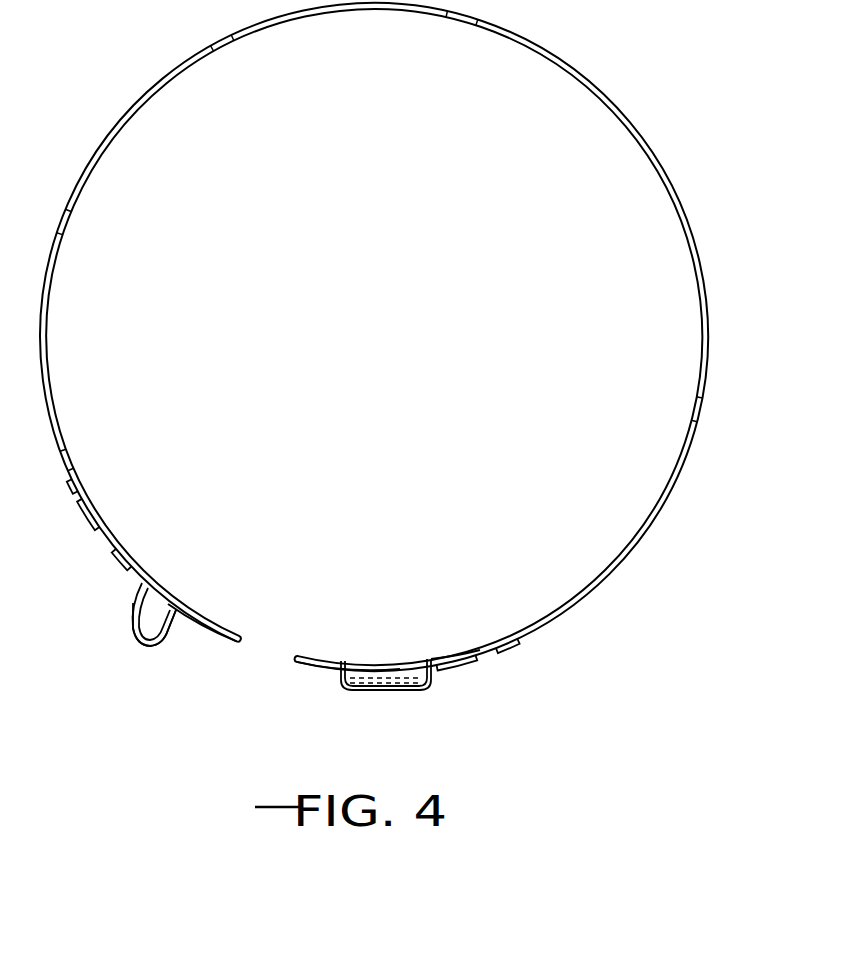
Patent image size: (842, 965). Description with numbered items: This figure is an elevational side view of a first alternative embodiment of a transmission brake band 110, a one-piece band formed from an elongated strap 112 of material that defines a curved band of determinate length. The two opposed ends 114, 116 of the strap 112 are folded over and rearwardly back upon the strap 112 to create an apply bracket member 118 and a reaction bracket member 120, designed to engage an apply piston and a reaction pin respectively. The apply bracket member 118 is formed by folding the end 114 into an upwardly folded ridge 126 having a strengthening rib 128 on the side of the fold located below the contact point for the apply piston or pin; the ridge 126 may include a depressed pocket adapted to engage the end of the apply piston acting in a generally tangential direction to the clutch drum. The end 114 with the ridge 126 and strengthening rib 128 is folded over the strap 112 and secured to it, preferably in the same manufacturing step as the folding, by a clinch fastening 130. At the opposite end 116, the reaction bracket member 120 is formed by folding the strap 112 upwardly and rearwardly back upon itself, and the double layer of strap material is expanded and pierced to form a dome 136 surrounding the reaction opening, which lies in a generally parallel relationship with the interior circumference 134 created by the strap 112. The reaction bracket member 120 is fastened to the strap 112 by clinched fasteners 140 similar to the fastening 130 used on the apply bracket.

The brake band 110 is at (384, 380).
The strap 112 is at (670, 186).
The end of strap 114 is at (223, 614).
The end of strap 116 is at (318, 644).
The apply bracket member 118 is at (148, 585).
The reaction bracket member 120 is at (343, 684).
The folded ridge 126 is at (147, 619).
The strengthening rib 128 is at (172, 618).
The clinch fastening 130 is at (113, 571).
The interior circumference 134 is at (441, 658).
The dome 136 is at (424, 686).
The clinched fasteners 140 is at (468, 668).